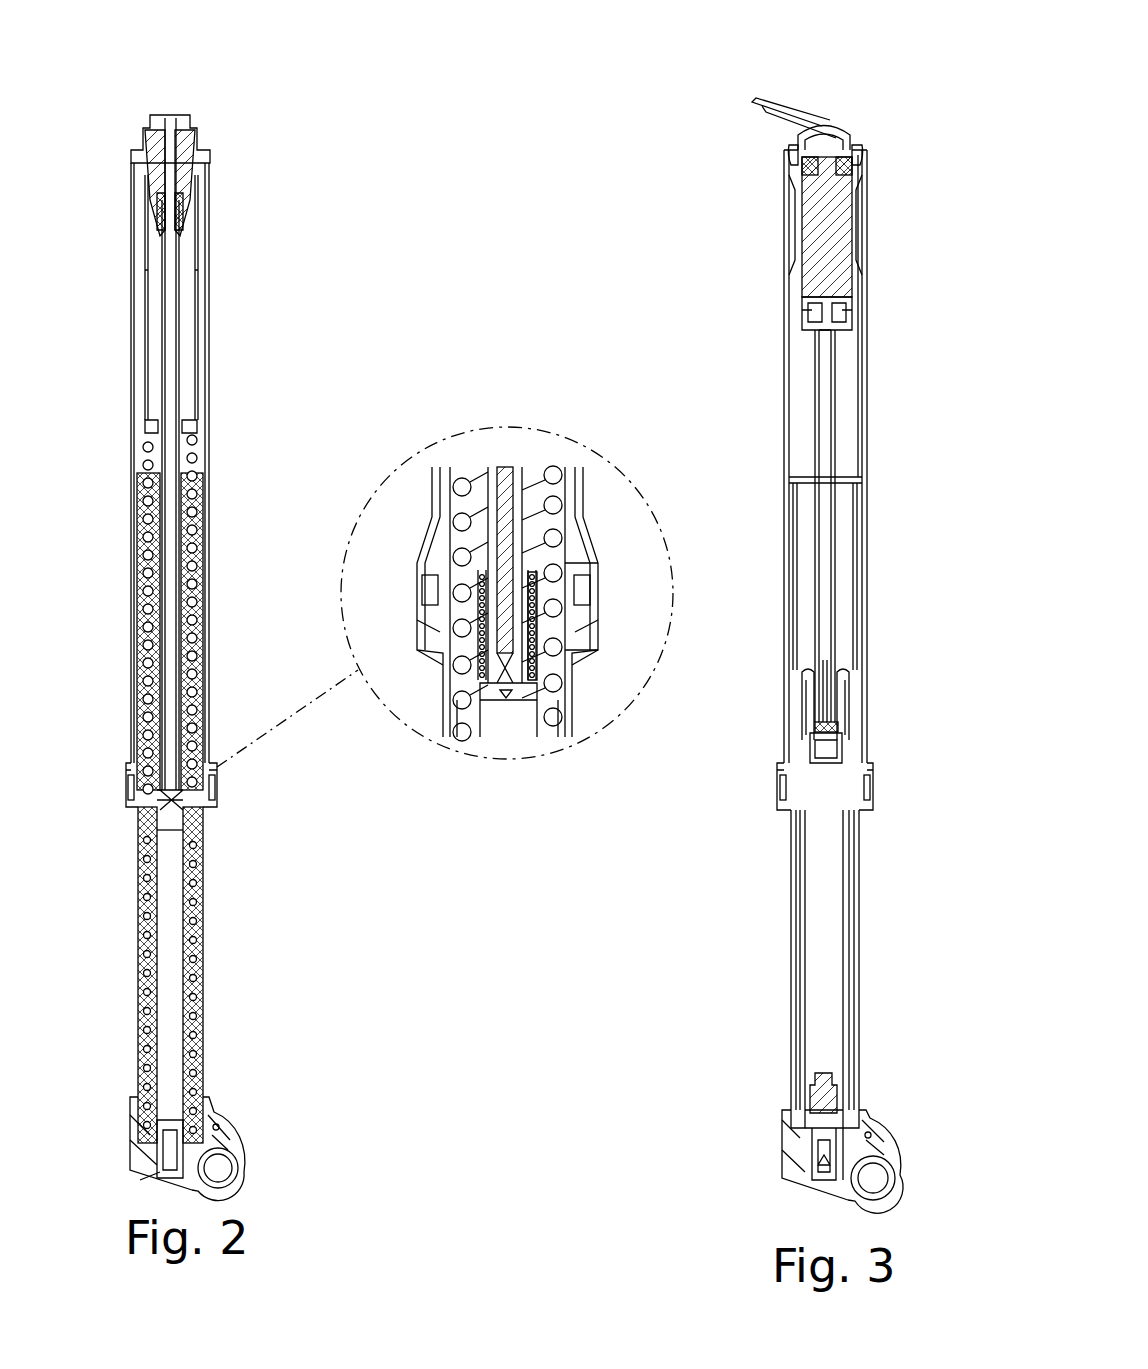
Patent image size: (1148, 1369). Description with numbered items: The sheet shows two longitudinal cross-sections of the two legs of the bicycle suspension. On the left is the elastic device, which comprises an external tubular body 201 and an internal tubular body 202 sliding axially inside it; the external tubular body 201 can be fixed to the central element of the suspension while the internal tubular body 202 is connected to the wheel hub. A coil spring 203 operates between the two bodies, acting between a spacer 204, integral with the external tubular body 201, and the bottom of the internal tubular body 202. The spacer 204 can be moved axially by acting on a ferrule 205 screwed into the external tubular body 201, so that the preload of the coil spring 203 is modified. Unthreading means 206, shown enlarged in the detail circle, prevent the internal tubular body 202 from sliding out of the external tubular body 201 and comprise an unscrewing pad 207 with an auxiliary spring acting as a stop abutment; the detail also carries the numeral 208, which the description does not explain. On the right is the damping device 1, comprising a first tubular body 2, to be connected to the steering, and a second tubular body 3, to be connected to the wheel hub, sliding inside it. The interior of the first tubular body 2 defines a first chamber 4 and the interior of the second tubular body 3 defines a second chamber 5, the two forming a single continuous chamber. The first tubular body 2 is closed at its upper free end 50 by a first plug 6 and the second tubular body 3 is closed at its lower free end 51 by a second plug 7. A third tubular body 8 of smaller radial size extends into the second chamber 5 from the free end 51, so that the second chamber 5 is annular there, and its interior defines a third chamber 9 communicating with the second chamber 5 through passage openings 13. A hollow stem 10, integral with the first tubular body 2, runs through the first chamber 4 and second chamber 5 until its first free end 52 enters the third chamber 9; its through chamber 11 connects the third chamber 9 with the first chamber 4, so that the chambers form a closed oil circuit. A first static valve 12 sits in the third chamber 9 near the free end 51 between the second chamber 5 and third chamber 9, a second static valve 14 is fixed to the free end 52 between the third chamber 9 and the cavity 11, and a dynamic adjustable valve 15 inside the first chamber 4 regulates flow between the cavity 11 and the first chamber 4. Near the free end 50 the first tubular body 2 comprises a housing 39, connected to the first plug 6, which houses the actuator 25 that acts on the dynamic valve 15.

In FIG. 3, the damping device 1 is at (677, 83).
In FIG. 3, the first tubular body 2 is at (865, 302).
In FIG. 3, the second tubular body 3 is at (860, 932).
In FIG. 3, the first chamber 4 is at (843, 398).
In FIG. 3, the second chamber 5 is at (845, 569).
In FIG. 3, the first plug 6 is at (857, 168).
In FIG. 3, the second plug 7 is at (783, 1135).
In FIG. 3, the third tubular body 8 is at (848, 875).
In FIG. 3, the third chamber 9 is at (837, 983).
In FIG. 3, the hollow stem 10 is at (837, 607).
In FIG. 3, the through chamber 11 is at (828, 520).
In FIG. 3, the first static valve 12 is at (840, 1093).
In FIG. 3, the passage openings 13 is at (797, 1122).
In FIG. 3, the second static valve 14 is at (840, 750).
In FIG. 3, the dynamic adjustable valve 15 is at (803, 312).
In FIG. 3, the actuator 25 is at (838, 230).
In FIG. 3, the housing 39 is at (812, 298).
In FIG. 3, the free end 50 is at (868, 147).
In FIG. 3, the free end 51 is at (790, 1165).
In FIG. 3, the first free end 52 is at (838, 727).
In FIG. 2, the external tubular body 201 is at (210, 283).
In FIG. 2, the internal tubular body 202 is at (205, 893).
In FIG. 2, the coil spring 203 is at (207, 692).
In FIG. 2, the spacer 204 is at (199, 357).
In FIG. 2, the ferrule 205 is at (192, 143).
In FIG. 2, the unthreading means 206 is at (150, 868).
In FIG. 2, the unscrewing pad 207 is at (537, 557).
In FIG. 2, the bearing 208 is at (534, 623).